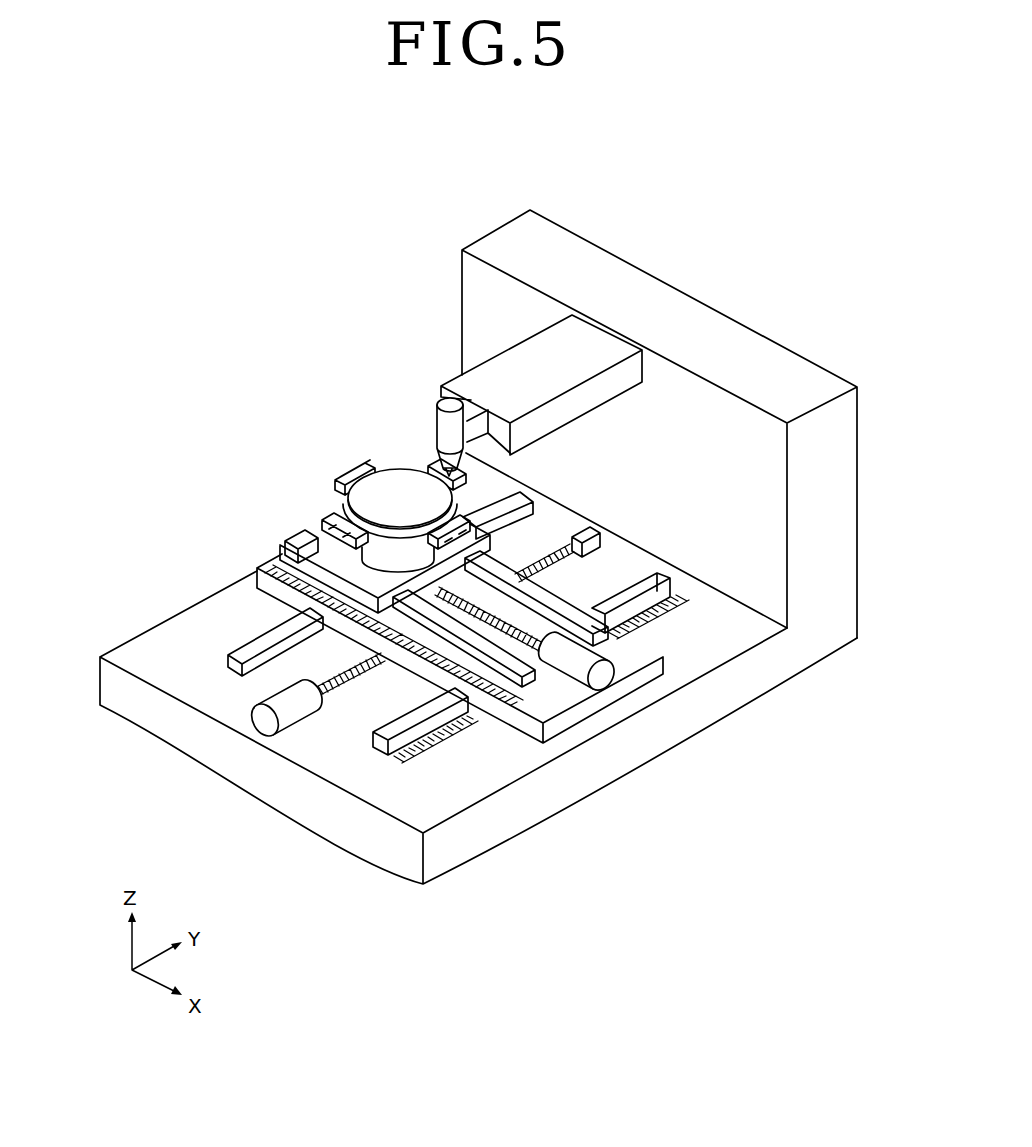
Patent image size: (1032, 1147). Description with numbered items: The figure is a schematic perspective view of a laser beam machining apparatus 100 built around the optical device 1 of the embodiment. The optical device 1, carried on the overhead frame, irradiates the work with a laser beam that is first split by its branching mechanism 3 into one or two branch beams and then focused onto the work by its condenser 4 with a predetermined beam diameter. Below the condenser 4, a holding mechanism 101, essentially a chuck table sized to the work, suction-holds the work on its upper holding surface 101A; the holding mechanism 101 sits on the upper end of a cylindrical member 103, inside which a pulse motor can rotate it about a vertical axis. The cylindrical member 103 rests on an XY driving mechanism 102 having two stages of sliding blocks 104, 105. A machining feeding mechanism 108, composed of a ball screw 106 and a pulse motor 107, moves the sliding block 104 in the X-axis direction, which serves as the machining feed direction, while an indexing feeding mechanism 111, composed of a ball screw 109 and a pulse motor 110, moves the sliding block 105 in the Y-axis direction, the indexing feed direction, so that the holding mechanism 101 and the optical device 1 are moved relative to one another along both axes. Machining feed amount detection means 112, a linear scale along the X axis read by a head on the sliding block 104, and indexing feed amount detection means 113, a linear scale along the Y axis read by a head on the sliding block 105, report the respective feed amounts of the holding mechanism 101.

The laser beam machining apparatus 100 is at (754, 242).
The optical device 1 is at (450, 374).
The branching mechanism 3 is at (440, 433).
The condenser 4 is at (408, 488).
The holding mechanism 101 is at (338, 503).
The holding surface 101A is at (440, 462).
The XY driving mechanism 102 is at (274, 606).
The cylindrical member 103 is at (365, 560).
The sliding block 104 is at (258, 576).
The sliding block 105 is at (636, 662).
The ball screw 106 is at (556, 645).
The pulse motor 107 is at (604, 676).
The machining feeding mechanism 108 is at (615, 656).
The ball screw 109 is at (330, 700).
The pulse motor 110 is at (265, 721).
The indexing feeding mechanism 111 is at (265, 678).
The machining feed amount detection means 112 is at (300, 741).
The indexing feed amount detection means 113 is at (436, 750).